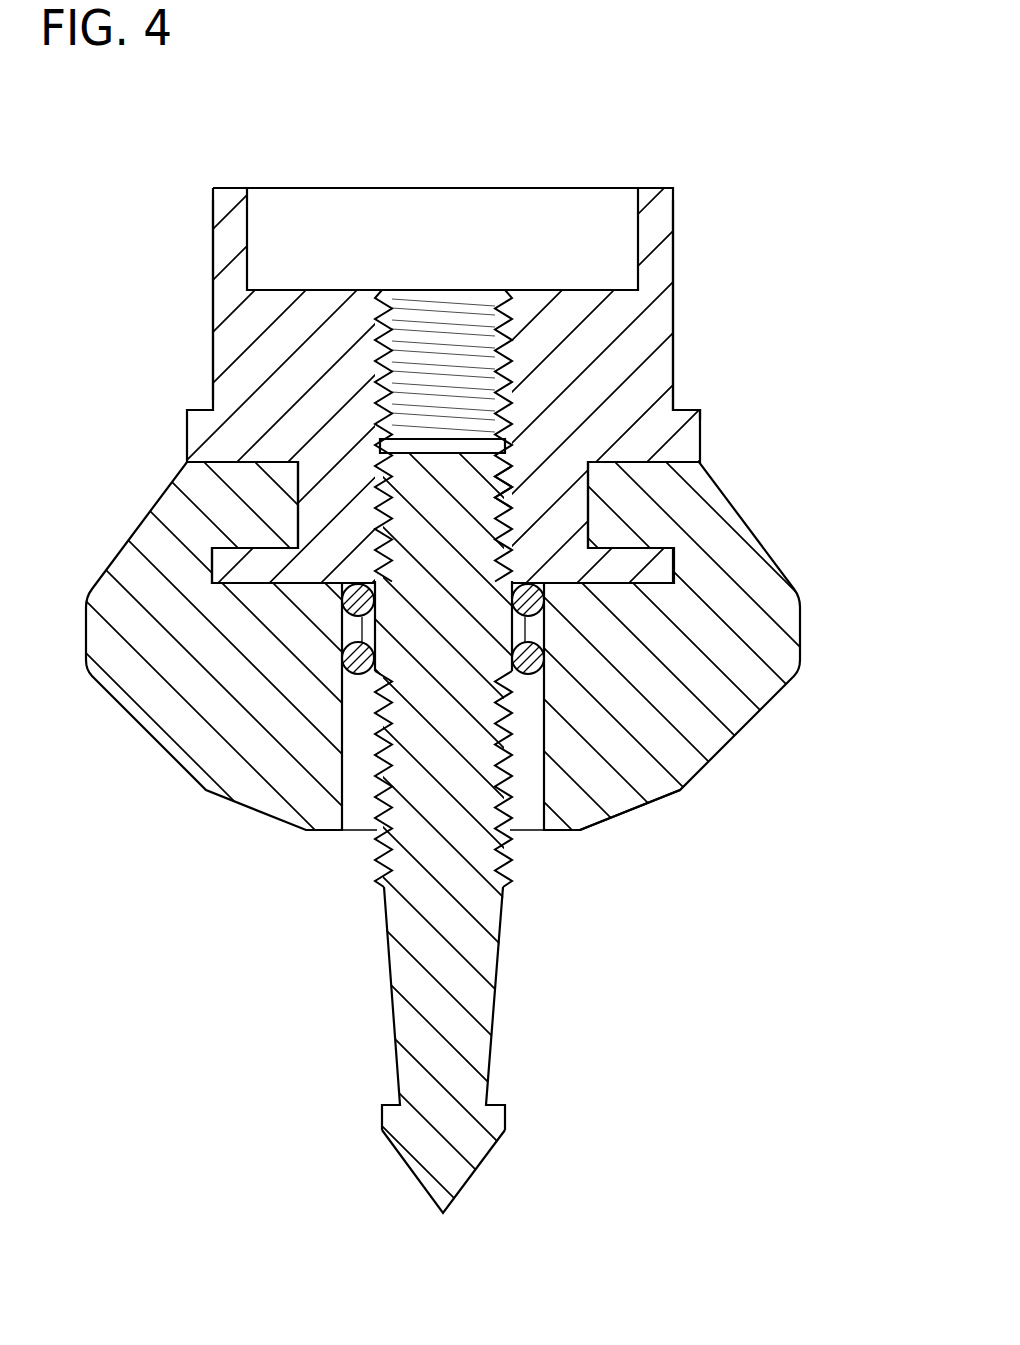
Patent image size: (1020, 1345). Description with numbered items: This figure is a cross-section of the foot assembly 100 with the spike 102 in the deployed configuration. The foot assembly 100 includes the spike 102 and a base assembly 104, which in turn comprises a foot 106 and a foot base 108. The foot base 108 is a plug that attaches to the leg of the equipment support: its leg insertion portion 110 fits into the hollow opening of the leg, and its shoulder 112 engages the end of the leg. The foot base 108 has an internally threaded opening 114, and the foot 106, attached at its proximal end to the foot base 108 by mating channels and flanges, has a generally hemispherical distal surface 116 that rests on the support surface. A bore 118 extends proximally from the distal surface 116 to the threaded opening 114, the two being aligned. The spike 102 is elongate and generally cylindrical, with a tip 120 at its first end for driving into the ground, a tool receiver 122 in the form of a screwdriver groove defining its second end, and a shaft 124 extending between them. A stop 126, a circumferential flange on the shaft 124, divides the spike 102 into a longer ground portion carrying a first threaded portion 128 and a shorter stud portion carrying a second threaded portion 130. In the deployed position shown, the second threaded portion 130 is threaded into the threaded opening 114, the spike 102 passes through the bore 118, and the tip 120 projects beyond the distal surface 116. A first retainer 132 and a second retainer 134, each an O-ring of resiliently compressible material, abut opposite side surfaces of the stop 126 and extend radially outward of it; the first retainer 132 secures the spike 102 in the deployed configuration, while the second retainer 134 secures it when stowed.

The foot assembly 100 is at (850, 136).
The spike 102 is at (537, 951).
The base assembly 104 is at (724, 206).
The foot 106 is at (806, 633).
The foot base 108 is at (210, 242).
The leg insertion portion 110 is at (677, 270).
The shoulder 112 is at (688, 410).
The threaded opening 114 is at (503, 377).
The distal surface 116 is at (640, 813).
The bore 118 is at (368, 764).
The tip 120 is at (468, 1177).
The tool receiver 122 is at (426, 430).
The shaft 124 is at (498, 998).
The stop 126 is at (367, 632).
The first threaded portion 128 is at (511, 764).
The second threaded portion 130 is at (510, 490).
The first retainer 132 is at (545, 596).
The second retainer 134 is at (545, 667).